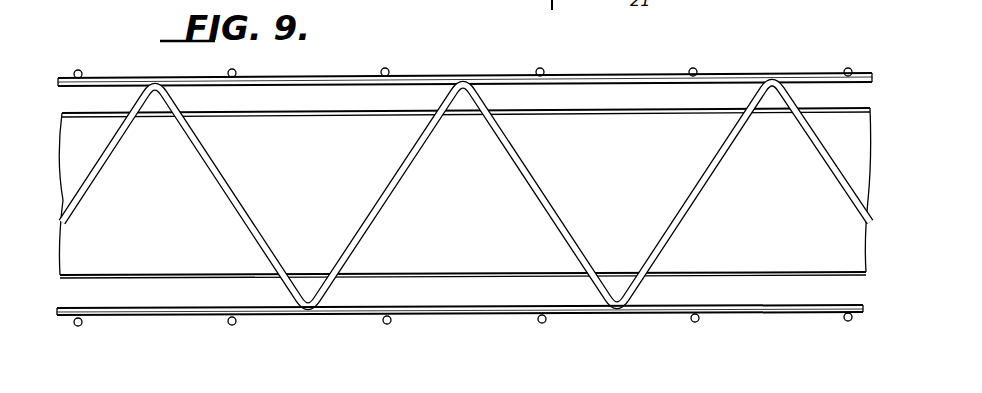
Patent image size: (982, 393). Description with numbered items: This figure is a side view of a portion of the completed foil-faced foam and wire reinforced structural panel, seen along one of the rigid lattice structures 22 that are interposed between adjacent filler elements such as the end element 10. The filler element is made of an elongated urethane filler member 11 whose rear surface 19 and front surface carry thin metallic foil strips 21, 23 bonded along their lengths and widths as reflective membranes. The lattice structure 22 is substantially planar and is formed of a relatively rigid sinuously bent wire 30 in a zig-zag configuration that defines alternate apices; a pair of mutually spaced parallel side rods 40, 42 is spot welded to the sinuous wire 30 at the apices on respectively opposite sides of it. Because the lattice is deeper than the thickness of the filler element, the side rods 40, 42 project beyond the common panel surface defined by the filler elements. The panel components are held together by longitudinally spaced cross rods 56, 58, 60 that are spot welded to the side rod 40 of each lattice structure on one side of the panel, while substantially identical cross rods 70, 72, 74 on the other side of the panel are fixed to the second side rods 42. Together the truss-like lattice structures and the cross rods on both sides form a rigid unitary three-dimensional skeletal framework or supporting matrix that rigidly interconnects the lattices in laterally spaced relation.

The end element 10 is at (396, 286).
The urethane filler member 11 is at (207, 263).
The rear surface 19 is at (457, 259).
The metallic foil strip 21 is at (322, 113).
The lattice structure 22 is at (471, 316).
The metallic foil strip 23 is at (670, 277).
The sinuously bent wire 30 is at (233, 195).
The side rod 40 is at (293, 79).
The second side rod 42 is at (345, 314).
The cross rod 56 is at (82, 71).
The cross rod 58 is at (236, 70).
The cross rod 60 is at (389, 70).
The cross rod 70 is at (543, 323).
The cross rod 72 is at (696, 322).
The cross rod 74 is at (844, 319).